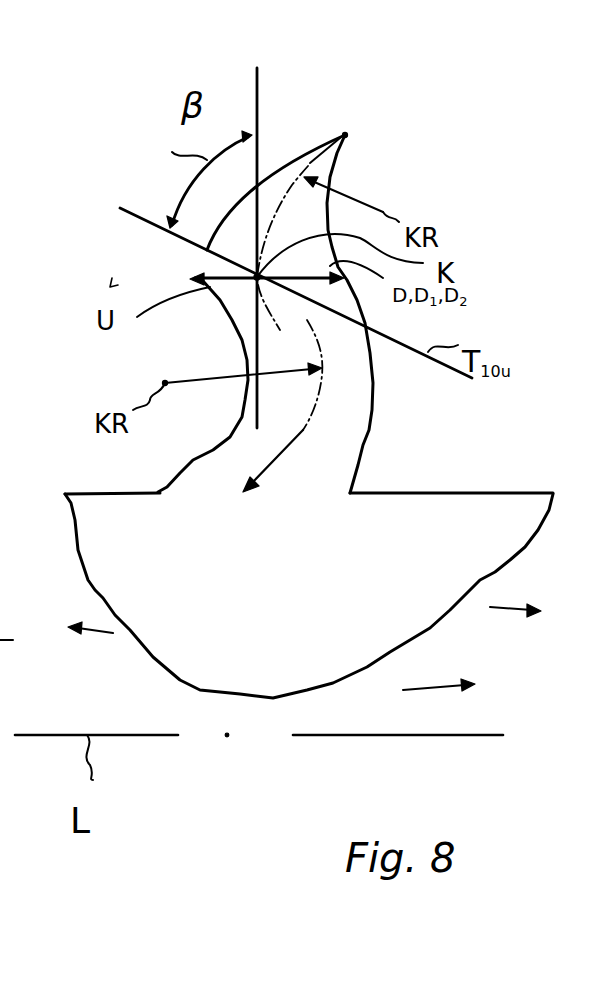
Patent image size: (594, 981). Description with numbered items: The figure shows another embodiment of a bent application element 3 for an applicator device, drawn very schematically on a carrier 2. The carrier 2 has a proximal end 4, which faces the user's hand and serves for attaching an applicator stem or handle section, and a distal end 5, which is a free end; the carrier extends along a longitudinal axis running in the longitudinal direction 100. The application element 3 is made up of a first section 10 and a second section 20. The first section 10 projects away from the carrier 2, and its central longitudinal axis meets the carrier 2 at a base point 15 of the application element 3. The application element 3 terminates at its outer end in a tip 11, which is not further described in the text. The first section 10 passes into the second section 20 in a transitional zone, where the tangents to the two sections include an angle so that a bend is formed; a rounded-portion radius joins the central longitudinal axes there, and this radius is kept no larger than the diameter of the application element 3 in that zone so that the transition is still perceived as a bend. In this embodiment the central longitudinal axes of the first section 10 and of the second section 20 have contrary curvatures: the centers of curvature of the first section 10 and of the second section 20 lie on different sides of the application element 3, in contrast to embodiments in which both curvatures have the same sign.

The carrier 2 is at (443, 495).
The application element 3 is at (307, 278).
The proximal end 4 is at (90, 647).
The distal end 5 is at (525, 622).
The first section 10 is at (373, 397).
The blade tip 11 is at (345, 135).
The base point 15 is at (283, 468).
The second section 20 is at (337, 162).
The longitudinal direction 100 is at (460, 687).